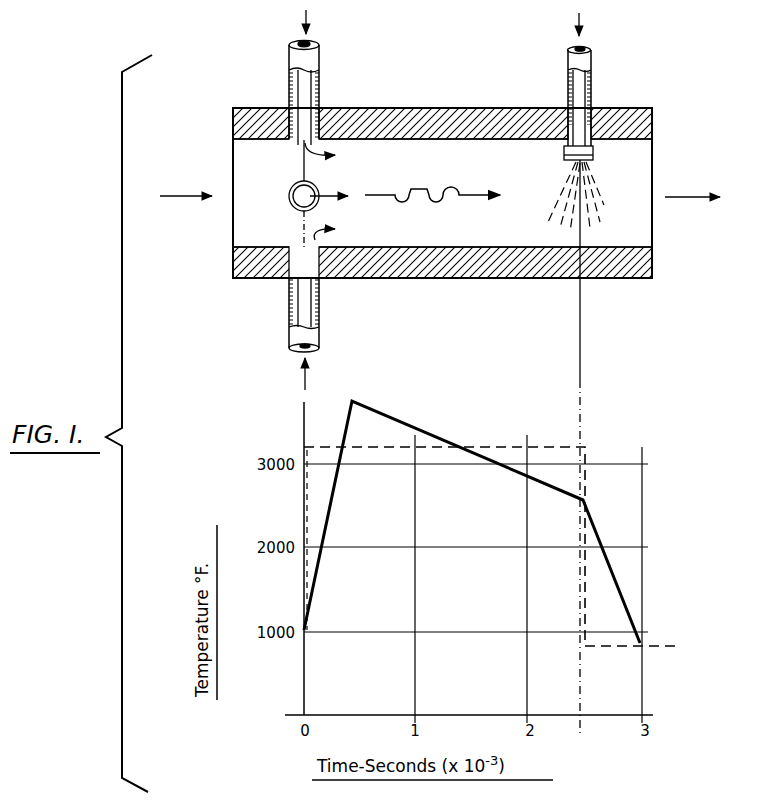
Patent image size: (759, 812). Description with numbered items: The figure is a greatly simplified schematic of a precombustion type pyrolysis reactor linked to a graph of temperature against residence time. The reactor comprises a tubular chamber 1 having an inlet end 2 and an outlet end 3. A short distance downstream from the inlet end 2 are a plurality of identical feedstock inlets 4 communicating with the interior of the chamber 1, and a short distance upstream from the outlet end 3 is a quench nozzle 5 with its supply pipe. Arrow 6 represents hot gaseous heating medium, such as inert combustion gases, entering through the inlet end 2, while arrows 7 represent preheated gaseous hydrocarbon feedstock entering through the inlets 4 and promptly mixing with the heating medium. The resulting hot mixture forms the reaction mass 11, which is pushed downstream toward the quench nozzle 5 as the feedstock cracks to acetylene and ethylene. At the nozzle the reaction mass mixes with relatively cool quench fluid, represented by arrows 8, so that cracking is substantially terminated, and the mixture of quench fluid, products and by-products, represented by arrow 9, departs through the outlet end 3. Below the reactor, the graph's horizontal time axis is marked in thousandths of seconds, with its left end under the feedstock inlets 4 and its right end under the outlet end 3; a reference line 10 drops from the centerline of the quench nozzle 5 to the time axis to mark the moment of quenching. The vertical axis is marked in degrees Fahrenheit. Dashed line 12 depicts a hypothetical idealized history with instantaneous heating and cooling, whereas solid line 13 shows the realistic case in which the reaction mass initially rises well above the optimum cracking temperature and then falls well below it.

The tubular chamber 1 is at (506, 117).
The inlet end 2 is at (230, 221).
The outlet end 3 is at (655, 238).
The feedstock inlets 4 is at (320, 90).
The quench nozzle 5 is at (585, 155).
The flow of hot gaseous heating medium 6 is at (185, 195).
The gaseous hydrocarbon feedstock 7 is at (303, 15).
The quench fluid 8 is at (585, 17).
The mixture of quench fluid, reaction products and by-products 9 is at (685, 194).
The reference line 10 is at (580, 368).
The reaction mass 11 is at (468, 198).
The dashed line 12 is at (510, 445).
The solid line 13 is at (400, 417).